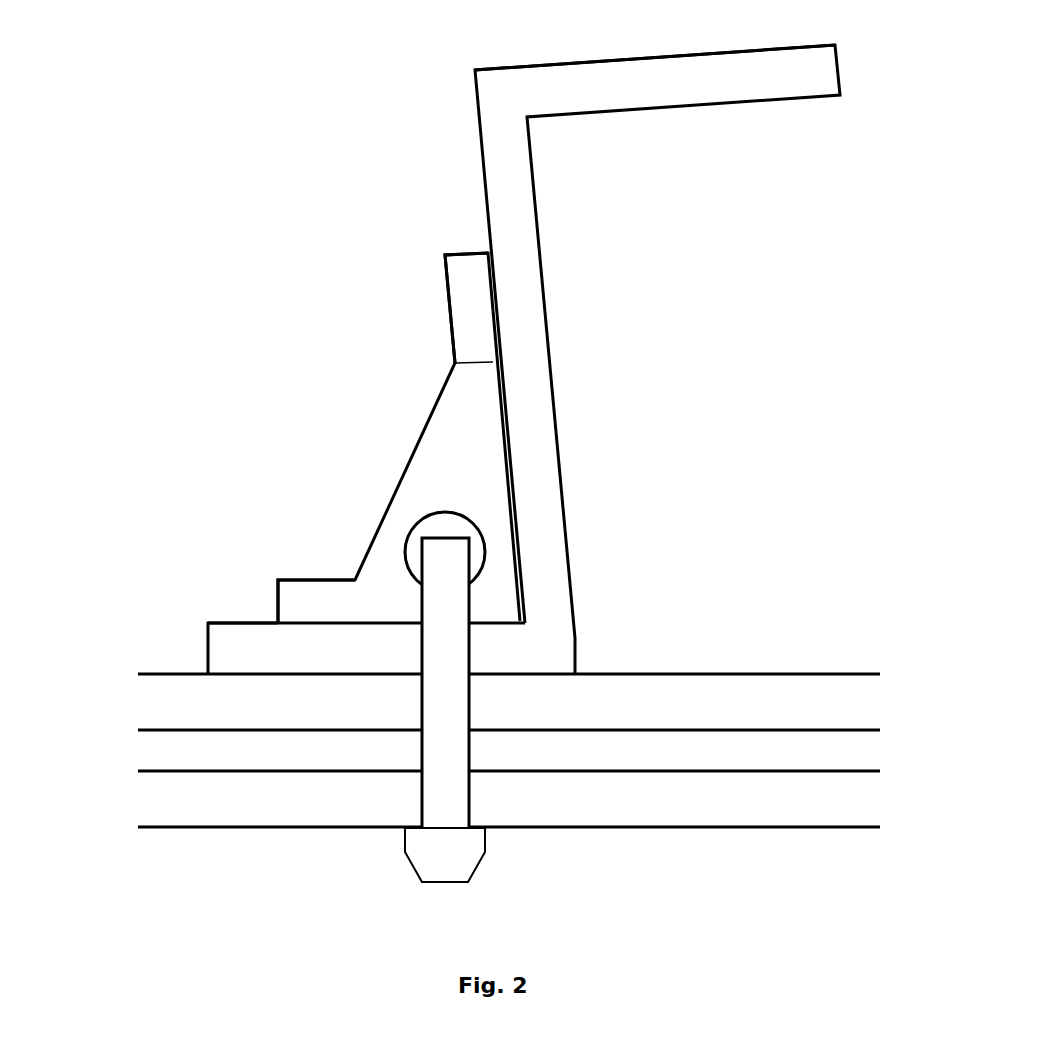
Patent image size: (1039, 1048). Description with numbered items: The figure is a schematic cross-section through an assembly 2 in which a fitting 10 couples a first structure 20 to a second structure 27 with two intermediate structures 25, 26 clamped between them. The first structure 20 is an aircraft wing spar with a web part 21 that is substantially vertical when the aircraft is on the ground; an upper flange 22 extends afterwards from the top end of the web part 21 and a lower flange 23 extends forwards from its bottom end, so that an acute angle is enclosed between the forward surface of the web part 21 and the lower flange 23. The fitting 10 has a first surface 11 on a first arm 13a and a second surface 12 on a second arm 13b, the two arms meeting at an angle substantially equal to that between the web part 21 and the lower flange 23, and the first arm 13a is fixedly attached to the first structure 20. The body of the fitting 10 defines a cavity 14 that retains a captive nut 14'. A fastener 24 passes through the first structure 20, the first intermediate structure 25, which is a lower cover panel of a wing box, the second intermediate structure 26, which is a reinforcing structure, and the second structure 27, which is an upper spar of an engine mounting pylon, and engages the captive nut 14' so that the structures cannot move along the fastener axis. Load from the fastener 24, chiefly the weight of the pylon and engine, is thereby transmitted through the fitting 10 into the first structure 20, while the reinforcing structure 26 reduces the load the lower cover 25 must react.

The assembly 2 is at (200, 72).
The fitting 10 is at (229, 394).
The first surface 11 is at (493, 361).
The second surface 12 is at (342, 622).
The first arm 13a is at (468, 297).
The second arm 13b is at (308, 600).
The cavity 14 is at (541, 679).
The captive nut 14' is at (528, 512).
The first structure 20 is at (732, 398).
The web part 21 is at (510, 213).
The upper flange 22 is at (733, 80).
The lower flange 23 is at (227, 655).
The fastener 24 is at (440, 849).
The first intermediate structure 25 is at (165, 703).
The second intermediate structure 26 is at (150, 753).
The second structure 27 is at (155, 803).